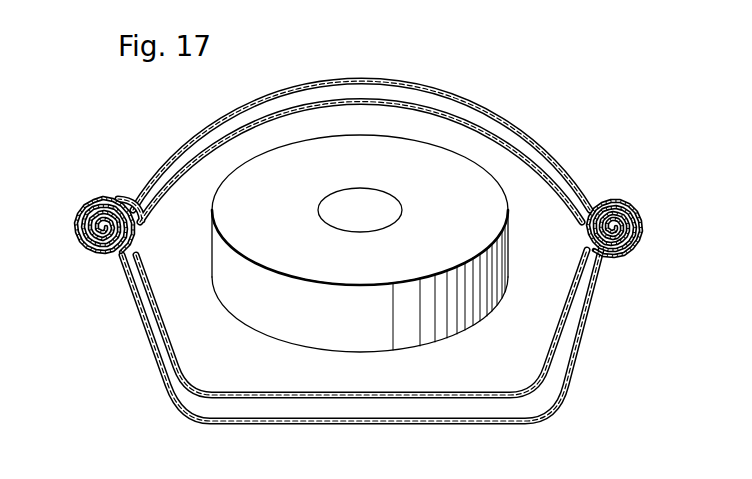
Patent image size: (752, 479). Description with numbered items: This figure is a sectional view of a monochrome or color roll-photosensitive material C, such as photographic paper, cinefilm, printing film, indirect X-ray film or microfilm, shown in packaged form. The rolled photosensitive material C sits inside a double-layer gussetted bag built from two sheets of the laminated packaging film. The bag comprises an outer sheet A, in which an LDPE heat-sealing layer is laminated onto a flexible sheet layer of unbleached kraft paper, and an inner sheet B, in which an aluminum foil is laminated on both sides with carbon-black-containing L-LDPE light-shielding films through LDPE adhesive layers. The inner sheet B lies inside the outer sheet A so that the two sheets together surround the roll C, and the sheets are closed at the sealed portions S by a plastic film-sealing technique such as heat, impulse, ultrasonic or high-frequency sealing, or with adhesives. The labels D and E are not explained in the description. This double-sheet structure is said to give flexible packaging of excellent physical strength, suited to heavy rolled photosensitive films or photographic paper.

The outer sheet A is at (344, 426).
The inner sheet B is at (257, 400).
The photosensitive material C is at (453, 182).
The inner lid layer D is at (126, 200).
The outer lid layer E is at (583, 197).
The sealed portion S is at (80, 245).